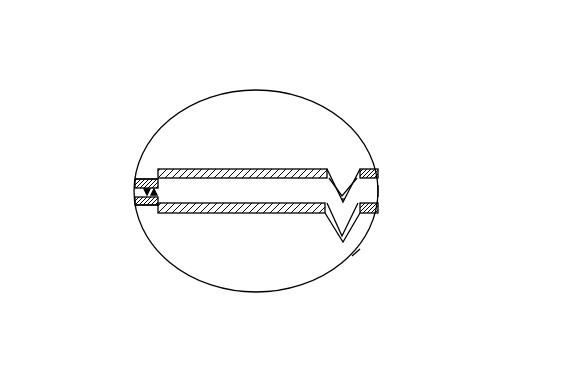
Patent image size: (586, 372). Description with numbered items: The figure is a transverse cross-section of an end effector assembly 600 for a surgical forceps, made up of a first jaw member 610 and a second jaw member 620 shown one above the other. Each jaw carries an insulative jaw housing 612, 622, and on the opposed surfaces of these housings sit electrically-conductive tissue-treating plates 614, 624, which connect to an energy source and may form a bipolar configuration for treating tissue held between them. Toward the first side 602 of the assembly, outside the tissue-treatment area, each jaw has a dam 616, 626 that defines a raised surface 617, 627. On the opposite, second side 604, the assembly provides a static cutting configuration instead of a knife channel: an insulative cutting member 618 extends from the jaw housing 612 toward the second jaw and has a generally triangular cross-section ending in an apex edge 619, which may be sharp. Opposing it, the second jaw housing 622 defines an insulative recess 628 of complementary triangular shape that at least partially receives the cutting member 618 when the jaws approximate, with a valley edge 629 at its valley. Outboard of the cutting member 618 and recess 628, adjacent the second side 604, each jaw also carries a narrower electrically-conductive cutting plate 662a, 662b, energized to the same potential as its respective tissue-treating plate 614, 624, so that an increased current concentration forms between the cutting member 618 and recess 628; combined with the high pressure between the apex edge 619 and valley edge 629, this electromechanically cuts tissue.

The end effector assembly 600 is at (362, 80).
The first side 602 is at (133, 192).
The second side 604 is at (425, 165).
The first jaw member 610 is at (320, 78).
The insulative jaw housing 612 is at (262, 100).
The electrically-conductive tissue-treating plate 614 is at (185, 169).
The dam 616 is at (135, 182).
The raised surface 617 is at (157, 205).
The insulative cutting member 618 is at (345, 178).
The apex edge 619 is at (348, 200).
The second jaw member 620 is at (327, 283).
The insulative jaw housing 622 is at (268, 273).
The electrically-conductive tissue-treating plate 624 is at (230, 213).
The dam 626 is at (145, 205).
The raised surface 627 is at (147, 180).
The insulative recess 628 is at (346, 223).
The valley edge 629 is at (340, 255).
The electrically-conductive cutting plate 662a is at (379, 173).
The electrically-conductive cutting plate 662b is at (379, 208).